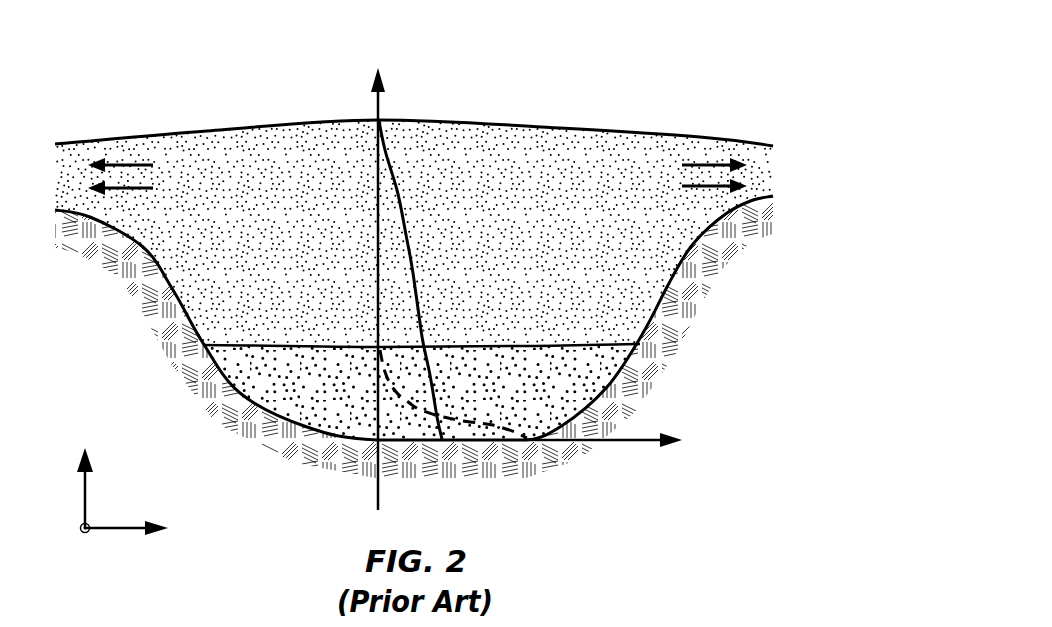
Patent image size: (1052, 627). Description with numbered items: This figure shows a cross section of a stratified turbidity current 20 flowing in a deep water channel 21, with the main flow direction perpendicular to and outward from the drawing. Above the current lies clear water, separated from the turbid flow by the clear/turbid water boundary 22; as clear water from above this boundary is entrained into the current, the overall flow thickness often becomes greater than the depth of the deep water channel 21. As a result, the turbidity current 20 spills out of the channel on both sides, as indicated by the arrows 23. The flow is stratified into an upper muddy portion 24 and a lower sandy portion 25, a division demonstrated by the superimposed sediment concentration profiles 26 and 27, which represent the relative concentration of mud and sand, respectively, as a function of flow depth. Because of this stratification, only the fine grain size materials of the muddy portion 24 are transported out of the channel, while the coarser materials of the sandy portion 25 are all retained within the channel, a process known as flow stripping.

The stratified turbidity current 20 is at (124, 74).
The deep water channel 21 is at (173, 291).
The clear/turbid water boundary 22 is at (310, 121).
The arrows 23 is at (127, 164).
The muddy portion 24 is at (561, 150).
The sandy portion 25 is at (275, 399).
The sediment concentration profile 26 is at (408, 231).
The sediment concentration profile 27 is at (495, 428).